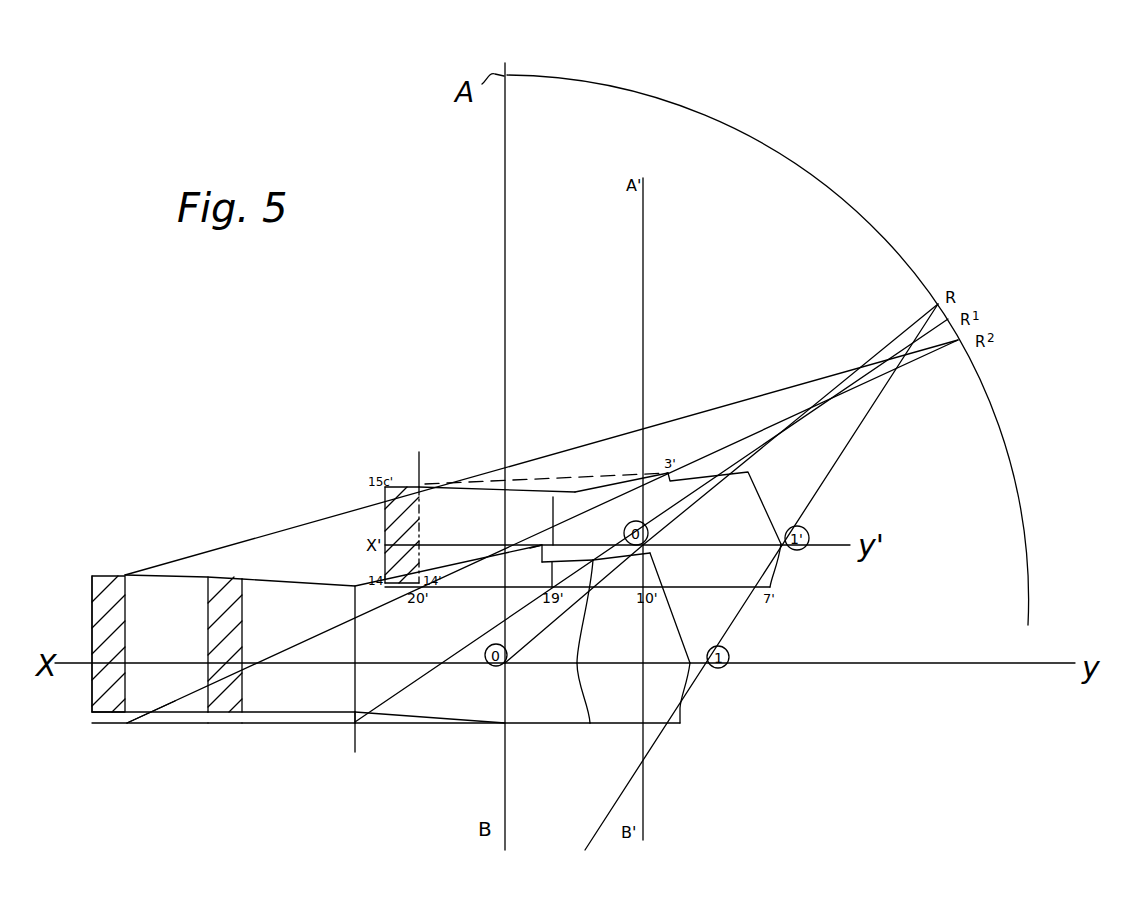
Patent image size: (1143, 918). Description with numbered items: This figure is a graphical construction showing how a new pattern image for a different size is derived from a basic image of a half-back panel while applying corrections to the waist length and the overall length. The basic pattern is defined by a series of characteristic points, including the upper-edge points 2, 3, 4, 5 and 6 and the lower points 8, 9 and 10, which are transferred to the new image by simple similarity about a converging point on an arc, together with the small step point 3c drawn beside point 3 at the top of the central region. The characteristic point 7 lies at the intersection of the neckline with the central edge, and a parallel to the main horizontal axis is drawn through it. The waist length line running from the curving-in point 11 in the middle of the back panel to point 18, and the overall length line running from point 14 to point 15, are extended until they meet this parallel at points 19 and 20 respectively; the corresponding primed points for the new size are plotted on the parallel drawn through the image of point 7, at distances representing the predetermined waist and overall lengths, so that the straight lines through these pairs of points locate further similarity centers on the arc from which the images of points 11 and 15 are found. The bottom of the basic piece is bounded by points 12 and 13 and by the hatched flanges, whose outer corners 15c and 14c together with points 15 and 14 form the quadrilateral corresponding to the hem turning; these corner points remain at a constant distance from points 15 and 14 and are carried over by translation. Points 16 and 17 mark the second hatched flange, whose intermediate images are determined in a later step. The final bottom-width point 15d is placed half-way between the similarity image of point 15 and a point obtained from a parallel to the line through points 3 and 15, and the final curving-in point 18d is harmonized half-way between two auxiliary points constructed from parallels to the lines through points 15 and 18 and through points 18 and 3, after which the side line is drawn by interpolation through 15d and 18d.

The basic pattern point 2 is at (448, 564).
The basic pattern point 3 is at (536, 549).
The step connection point 3c is at (550, 565).
The basic pattern point 4 is at (592, 560).
The basic pattern point 5 is at (627, 550).
The basic pattern point 6 is at (674, 608).
The characteristic point 7 is at (687, 700).
The basic pattern point 8 is at (628, 704).
The basic pattern point 9 is at (585, 611).
The basic pattern point 10 is at (472, 728).
The curving-in point 11 is at (356, 726).
The basic pattern point 12 is at (219, 729).
The basic pattern point 13 is at (281, 724).
The overall length point 14 is at (118, 728).
The hem turning point 14c is at (143, 724).
The overall length point 15 is at (115, 634).
The hem turning point 15c is at (94, 634).
The final point 15d is at (480, 485).
The basic pattern point 16 is at (220, 635).
The basic pattern point 17 is at (189, 636).
The curving-in point 18 is at (302, 639).
The final curving-in point 18d is at (546, 509).
The waist length intersection point 19 is at (355, 724).
The overall length intersection point 20 is at (127, 724).